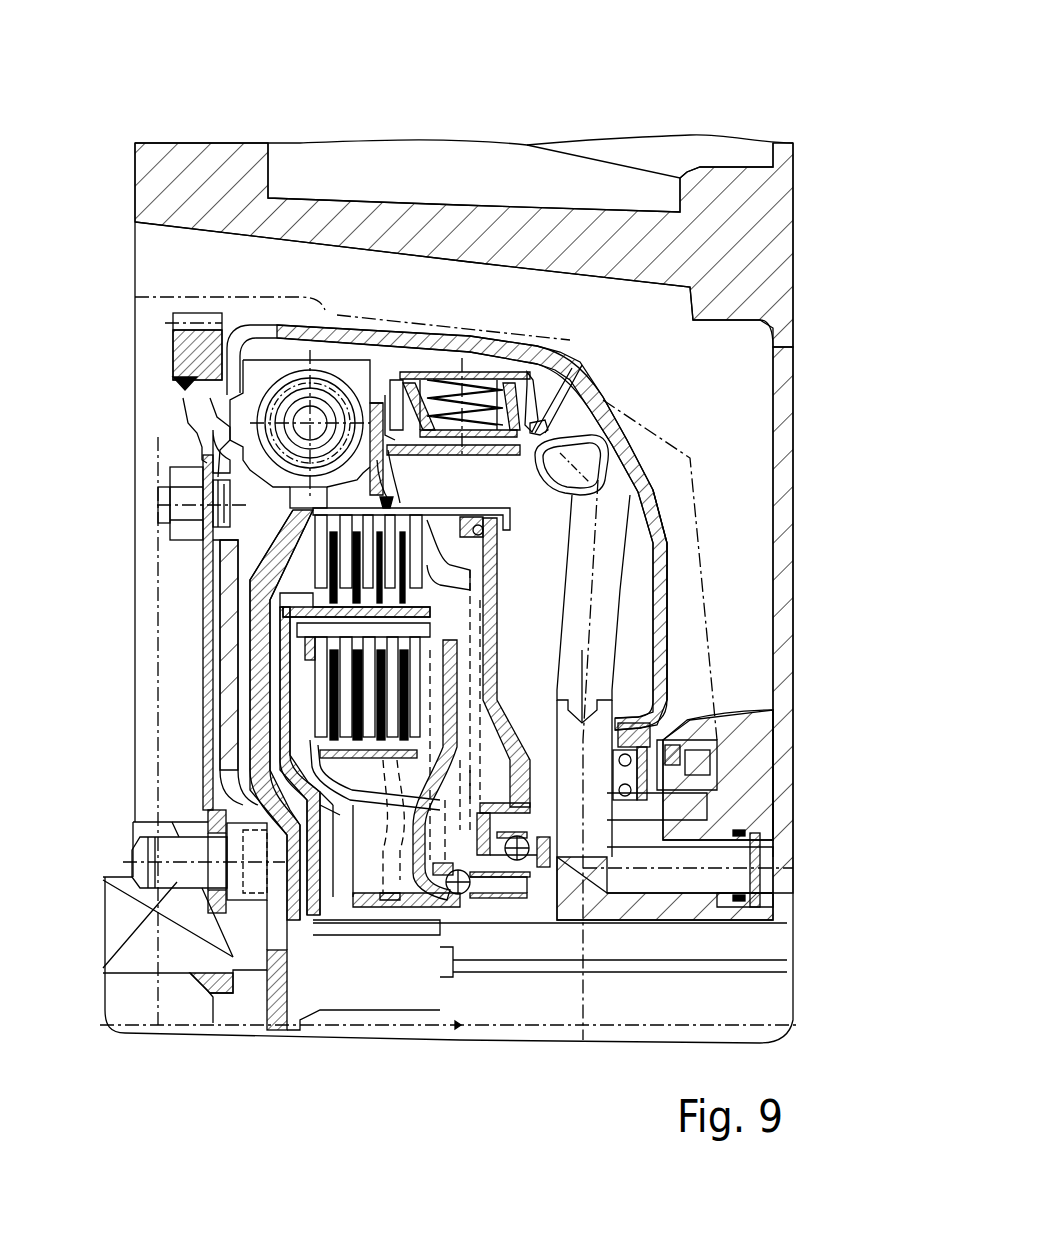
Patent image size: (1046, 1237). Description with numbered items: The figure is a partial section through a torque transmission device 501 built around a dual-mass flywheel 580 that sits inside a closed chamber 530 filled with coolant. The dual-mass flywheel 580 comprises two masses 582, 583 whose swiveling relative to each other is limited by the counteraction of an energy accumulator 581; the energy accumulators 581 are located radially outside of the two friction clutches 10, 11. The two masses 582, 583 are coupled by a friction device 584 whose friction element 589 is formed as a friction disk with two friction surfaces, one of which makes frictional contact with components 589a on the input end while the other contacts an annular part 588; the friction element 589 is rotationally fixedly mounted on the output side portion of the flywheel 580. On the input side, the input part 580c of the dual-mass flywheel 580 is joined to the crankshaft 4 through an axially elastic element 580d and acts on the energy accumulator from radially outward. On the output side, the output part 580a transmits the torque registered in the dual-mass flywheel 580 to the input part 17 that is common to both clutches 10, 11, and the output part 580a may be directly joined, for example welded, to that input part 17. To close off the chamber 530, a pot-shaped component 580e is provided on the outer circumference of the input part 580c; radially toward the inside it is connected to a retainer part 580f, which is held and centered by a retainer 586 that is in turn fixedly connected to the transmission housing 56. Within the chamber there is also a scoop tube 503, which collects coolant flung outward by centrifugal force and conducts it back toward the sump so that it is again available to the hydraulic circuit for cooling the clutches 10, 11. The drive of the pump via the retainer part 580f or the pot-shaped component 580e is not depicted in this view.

The torque transmission device 501 is at (503, 87).
The dual-mass flywheel 580 is at (333, 334).
The energy accumulator 581 is at (270, 378).
The components on the input end 589a is at (403, 385).
The friction device 584 is at (472, 375).
The annular part 588 is at (500, 420).
The friction element 589 is at (577, 413).
The chamber 530 is at (577, 412).
The mass 583 is at (185, 418).
The mass 582 is at (397, 479).
The friction clutch 10 is at (441, 505).
The output part 580a is at (300, 500).
The input part 17 is at (280, 537).
The input part 580c is at (228, 598).
The axially elastic element 580d is at (207, 713).
The pot-shaped component 580e is at (655, 497).
The retainer part 580f is at (618, 735).
The scoop tube 503 is at (603, 637).
The retainer 586 is at (757, 752).
The transmission housing 56 is at (775, 838).
The crankshaft 4 is at (160, 930).
The friction clutch 11 is at (371, 760).